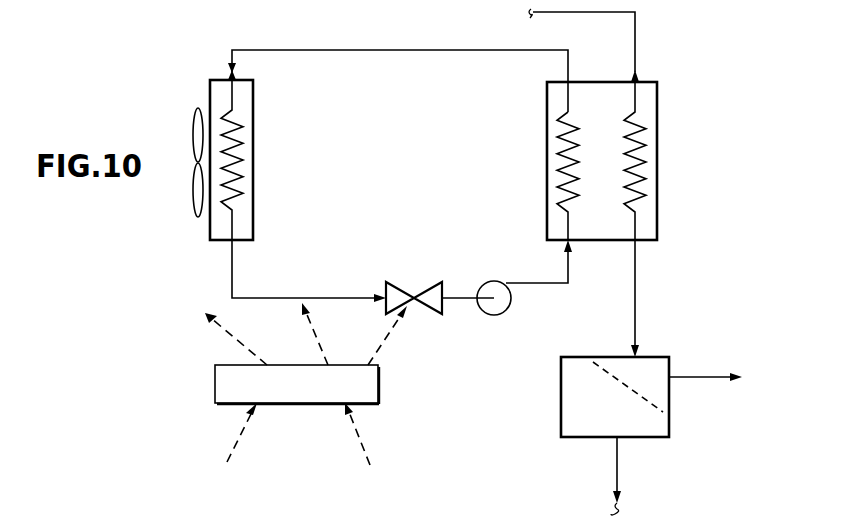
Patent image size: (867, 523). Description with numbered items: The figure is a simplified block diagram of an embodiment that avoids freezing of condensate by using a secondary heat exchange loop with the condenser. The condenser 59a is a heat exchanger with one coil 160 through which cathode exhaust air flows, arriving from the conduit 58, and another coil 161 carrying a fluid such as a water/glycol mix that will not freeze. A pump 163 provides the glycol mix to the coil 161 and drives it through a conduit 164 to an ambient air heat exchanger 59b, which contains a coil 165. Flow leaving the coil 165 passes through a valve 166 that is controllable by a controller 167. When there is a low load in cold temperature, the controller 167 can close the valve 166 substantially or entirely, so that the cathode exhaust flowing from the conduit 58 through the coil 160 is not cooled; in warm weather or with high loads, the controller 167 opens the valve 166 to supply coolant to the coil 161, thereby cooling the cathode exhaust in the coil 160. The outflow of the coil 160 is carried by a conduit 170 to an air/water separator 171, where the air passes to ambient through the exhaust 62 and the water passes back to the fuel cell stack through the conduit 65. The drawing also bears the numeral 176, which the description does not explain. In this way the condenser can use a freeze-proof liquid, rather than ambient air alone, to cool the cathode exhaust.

The ambient air heat exchanger 59b is at (226, 80).
The coil 165 is at (243, 160).
The conduit 164 is at (380, 50).
The conduit 58 is at (636, 42).
The condenser 59a is at (645, 82).
The coil 161 is at (556, 162).
The coil 160 is at (647, 162).
The conduit 170 is at (636, 308).
The air/water separator 171 is at (657, 424).
The exhaust 62 is at (708, 379).
The conduit 65 is at (617, 483).
The pump 163 is at (500, 313).
The valve 166 is at (414, 298).
The controller 167 is at (215, 382).
The reference numeral 176 is at (103, 513).